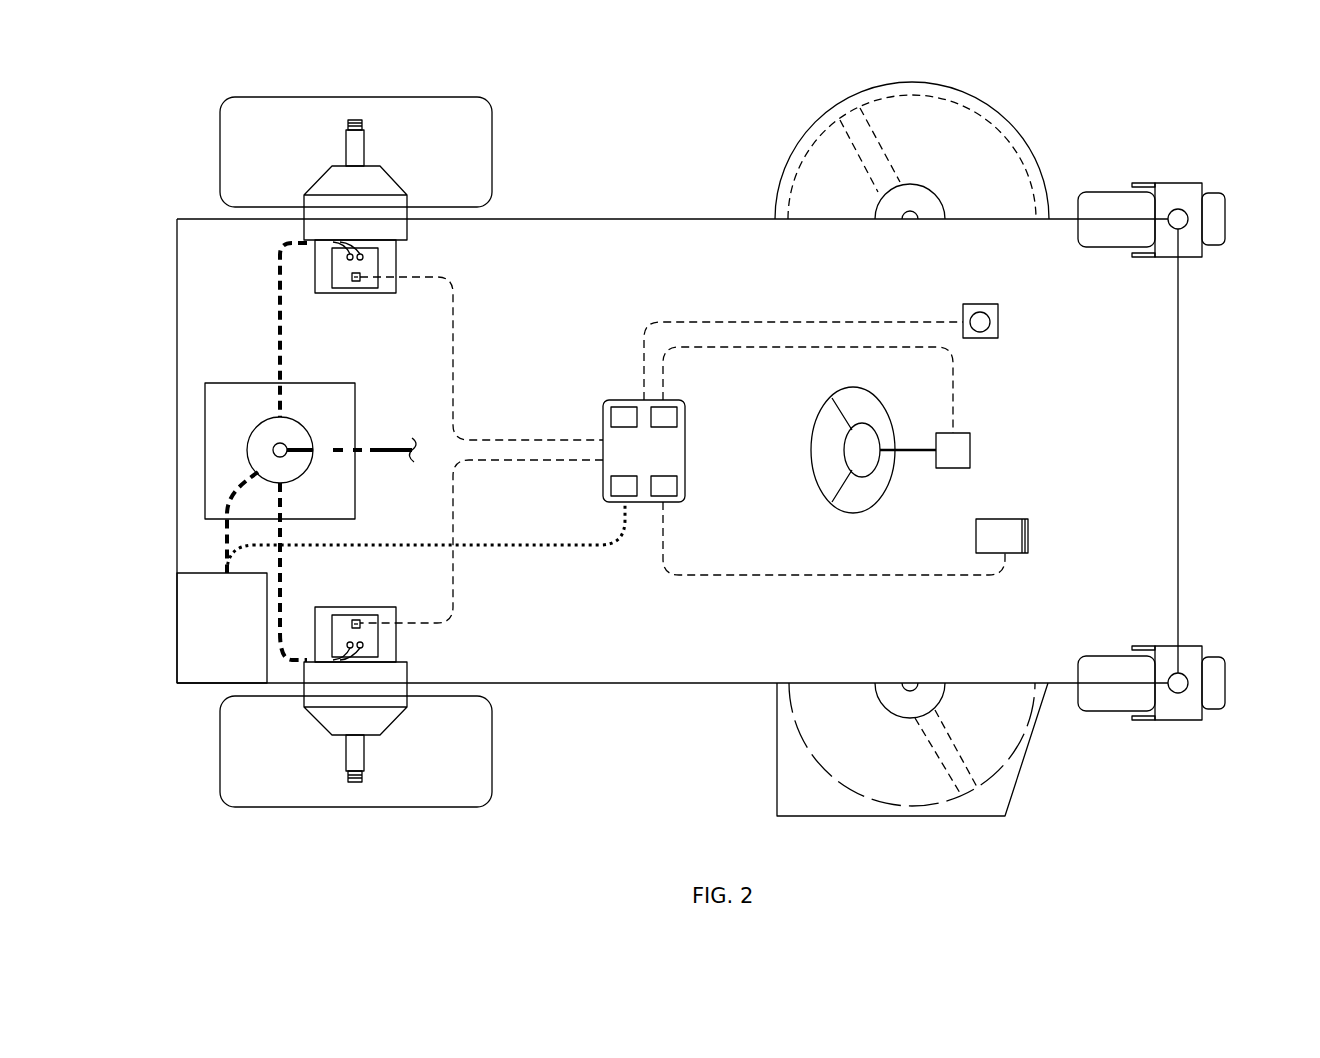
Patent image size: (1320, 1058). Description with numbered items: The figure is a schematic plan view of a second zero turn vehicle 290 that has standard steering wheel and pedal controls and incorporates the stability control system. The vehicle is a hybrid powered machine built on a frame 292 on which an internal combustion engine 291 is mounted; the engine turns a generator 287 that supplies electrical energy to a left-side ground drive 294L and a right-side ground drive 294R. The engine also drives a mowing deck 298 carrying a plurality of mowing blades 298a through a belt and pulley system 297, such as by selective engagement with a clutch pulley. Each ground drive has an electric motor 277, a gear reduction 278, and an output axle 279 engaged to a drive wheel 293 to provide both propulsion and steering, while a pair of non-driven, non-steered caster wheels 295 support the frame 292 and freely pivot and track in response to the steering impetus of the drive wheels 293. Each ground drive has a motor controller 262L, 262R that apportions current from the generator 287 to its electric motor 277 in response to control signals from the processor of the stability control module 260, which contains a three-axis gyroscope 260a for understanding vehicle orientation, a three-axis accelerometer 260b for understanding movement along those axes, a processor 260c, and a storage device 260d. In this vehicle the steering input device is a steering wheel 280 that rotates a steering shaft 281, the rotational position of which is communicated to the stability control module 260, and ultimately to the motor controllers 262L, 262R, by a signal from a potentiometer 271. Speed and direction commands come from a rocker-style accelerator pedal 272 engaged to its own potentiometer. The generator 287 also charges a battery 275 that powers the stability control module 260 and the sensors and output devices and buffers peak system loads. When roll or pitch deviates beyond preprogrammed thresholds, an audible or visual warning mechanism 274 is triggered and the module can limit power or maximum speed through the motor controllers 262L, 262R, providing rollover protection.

The zero turn vehicle 290 is at (168, 120).
The frame 292 is at (583, 219).
The drive wheel 293 is at (313, 97).
The left-side ground drive 294L is at (288, 178).
The right-side ground drive 294R is at (288, 722).
The output axle 279 is at (364, 141).
The gear reduction 278 is at (399, 183).
The electric motor 277 is at (396, 262).
The left motor controller 262L is at (341, 273).
The right motor controller 262R is at (341, 630).
The generator 287 is at (258, 428).
The internal combustion engine 291 is at (345, 509).
The belt and pulley system 297 is at (390, 448).
The battery 275 is at (245, 635).
The stability control module 260 is at (670, 459).
The gyroscope 260a is at (611, 415).
The accelerometer 260b is at (677, 415).
The processor 260c is at (611, 487).
The storage device 260d is at (677, 487).
The warning mechanism 274 is at (990, 322).
The steering wheel 280 is at (852, 388).
The steering shaft 281 is at (917, 448).
The potentiometer 271 is at (970, 450).
The accelerator pedal 272 is at (988, 519).
The mowing deck 298 is at (907, 83).
The mowing blade 298a is at (887, 158).
The caster wheel 295 is at (1225, 219).